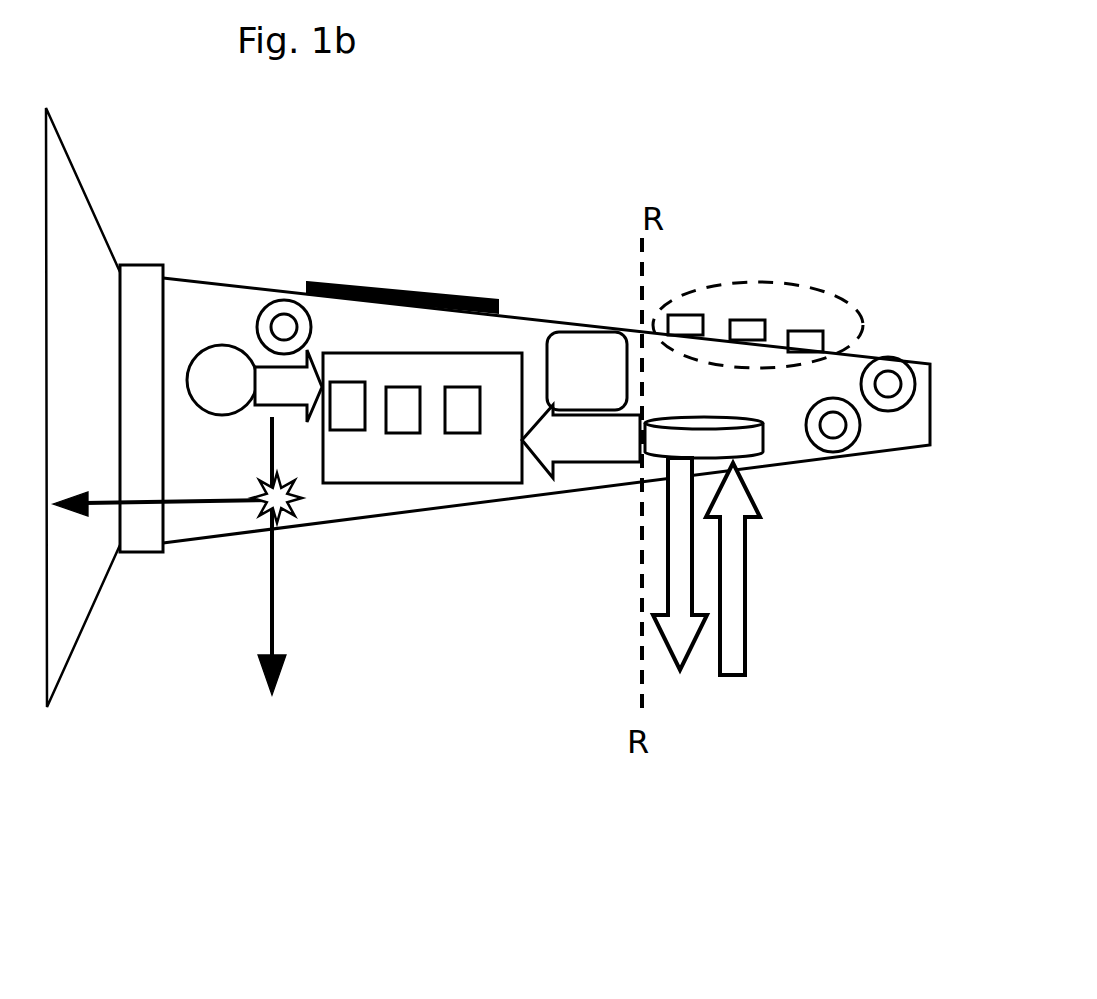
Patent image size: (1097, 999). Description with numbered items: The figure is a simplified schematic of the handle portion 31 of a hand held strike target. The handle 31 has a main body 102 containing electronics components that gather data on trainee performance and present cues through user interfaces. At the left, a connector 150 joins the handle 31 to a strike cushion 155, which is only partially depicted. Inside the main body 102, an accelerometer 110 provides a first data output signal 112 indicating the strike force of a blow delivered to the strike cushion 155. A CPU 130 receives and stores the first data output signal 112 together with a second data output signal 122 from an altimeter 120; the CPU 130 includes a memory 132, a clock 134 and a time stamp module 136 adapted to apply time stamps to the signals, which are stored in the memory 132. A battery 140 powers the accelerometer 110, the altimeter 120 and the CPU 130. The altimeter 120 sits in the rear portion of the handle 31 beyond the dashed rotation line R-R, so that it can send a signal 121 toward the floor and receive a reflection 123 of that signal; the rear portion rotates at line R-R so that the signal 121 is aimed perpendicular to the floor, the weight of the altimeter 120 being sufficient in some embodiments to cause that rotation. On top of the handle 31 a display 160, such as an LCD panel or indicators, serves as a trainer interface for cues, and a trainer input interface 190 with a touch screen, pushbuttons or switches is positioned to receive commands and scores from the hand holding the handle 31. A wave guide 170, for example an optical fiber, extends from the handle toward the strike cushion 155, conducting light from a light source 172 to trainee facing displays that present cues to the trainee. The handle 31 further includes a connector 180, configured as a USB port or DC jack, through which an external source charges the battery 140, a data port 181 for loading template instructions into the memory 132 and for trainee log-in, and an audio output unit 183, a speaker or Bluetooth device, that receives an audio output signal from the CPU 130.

The handle 31 is at (782, 136).
The main body 102 is at (267, 285).
The accelerometer 110 is at (215, 377).
The first data output signal 112 is at (288, 386).
The altimeter 120 is at (747, 443).
The signal 121 is at (680, 586).
The second data output signal 122 is at (581, 441).
The reflection 123 is at (771, 569).
The CPU 130 is at (505, 463).
The memory 132 is at (340, 415).
The clock 134 is at (402, 420).
The time stamp module 136 is at (463, 418).
The battery 140 is at (608, 368).
The connector 150 is at (139, 553).
The strike cushion 155 is at (80, 552).
The display 160 is at (475, 297).
The wave guide 170 is at (197, 498).
The light source 172 is at (283, 520).
The connector 180 is at (833, 425).
The data port 181 is at (887, 384).
The audio output unit 183 is at (285, 327).
The trainer input interface 190 is at (820, 282).